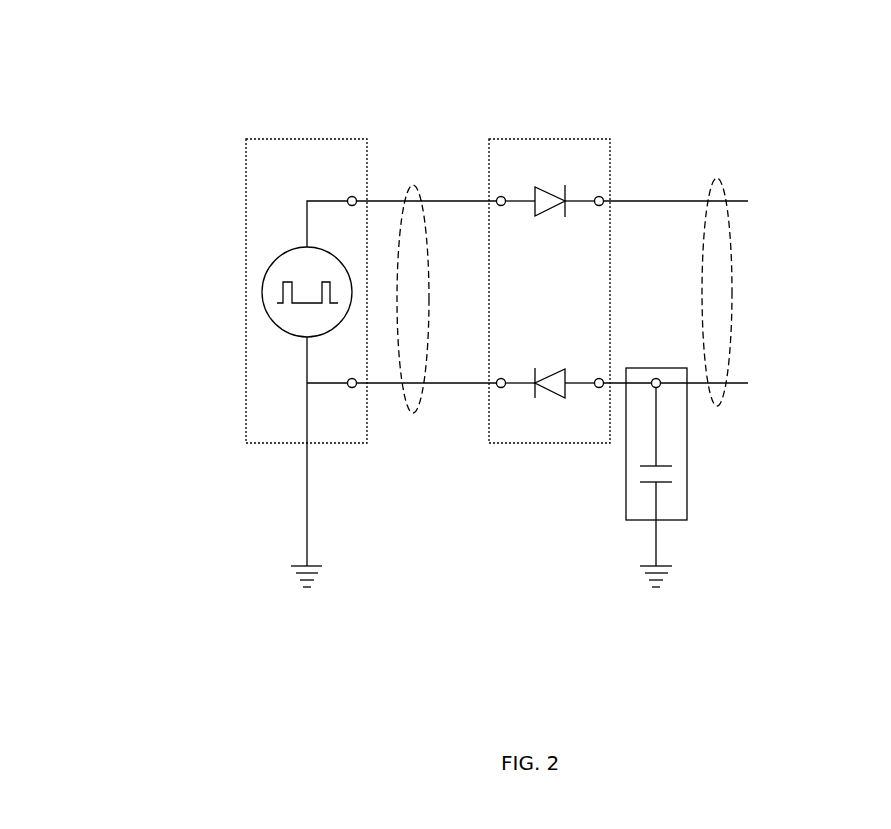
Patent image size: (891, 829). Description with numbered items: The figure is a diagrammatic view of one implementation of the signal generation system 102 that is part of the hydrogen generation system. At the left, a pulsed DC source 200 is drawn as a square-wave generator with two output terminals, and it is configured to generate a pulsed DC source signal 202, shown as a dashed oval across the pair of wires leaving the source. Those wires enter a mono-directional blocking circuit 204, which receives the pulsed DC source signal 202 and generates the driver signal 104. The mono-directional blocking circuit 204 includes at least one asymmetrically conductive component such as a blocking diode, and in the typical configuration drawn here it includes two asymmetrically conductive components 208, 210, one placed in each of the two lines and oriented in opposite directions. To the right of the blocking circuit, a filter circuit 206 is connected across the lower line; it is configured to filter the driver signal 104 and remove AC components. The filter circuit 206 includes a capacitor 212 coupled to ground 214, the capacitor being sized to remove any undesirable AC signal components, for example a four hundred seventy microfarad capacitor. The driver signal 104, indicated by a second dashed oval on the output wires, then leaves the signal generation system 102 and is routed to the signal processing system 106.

The signal generation system 102 is at (58, 42).
The driver signal 104 is at (717, 180).
The signal processing system 106 is at (830, 290).
The pulsed DC source 200 is at (306, 291).
The pulsed DC source signal 202 is at (413, 185).
The mono-directional blocking circuit 204 is at (549, 291).
The filter circuit 206 is at (687, 472).
The asymmetrically conductive component 208 is at (535, 187).
The asymmetrically conductive component 210 is at (567, 369).
The capacitor 212 is at (640, 474).
The ground 214 is at (674, 566).